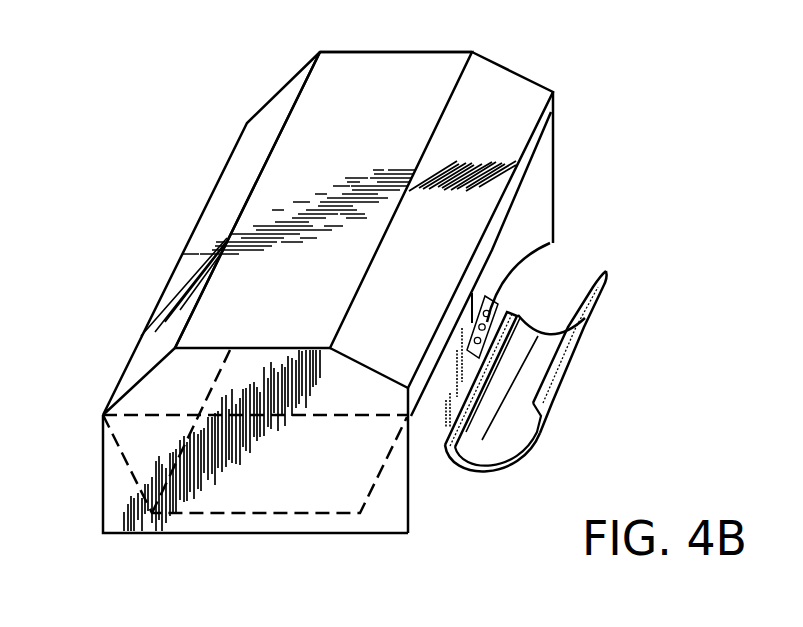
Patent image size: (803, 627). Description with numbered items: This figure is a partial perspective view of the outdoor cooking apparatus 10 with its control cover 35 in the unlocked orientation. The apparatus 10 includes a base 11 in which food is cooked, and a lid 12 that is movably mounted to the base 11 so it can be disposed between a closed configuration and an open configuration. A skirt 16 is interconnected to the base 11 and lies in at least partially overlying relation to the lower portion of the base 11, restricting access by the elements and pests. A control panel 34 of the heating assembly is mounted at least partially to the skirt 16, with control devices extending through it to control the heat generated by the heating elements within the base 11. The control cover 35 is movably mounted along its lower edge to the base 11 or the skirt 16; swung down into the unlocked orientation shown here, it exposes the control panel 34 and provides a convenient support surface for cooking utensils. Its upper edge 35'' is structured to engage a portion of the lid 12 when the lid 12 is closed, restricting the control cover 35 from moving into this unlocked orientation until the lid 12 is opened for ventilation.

The outdoor cooking apparatus 10 is at (158, 188).
The base 11 is at (368, 498).
The lid 12 is at (555, 110).
The skirt 16 is at (555, 163).
The control panel 34 is at (550, 243).
The control cover 35 is at (493, 439).
The upper edge 35'' is at (627, 352).